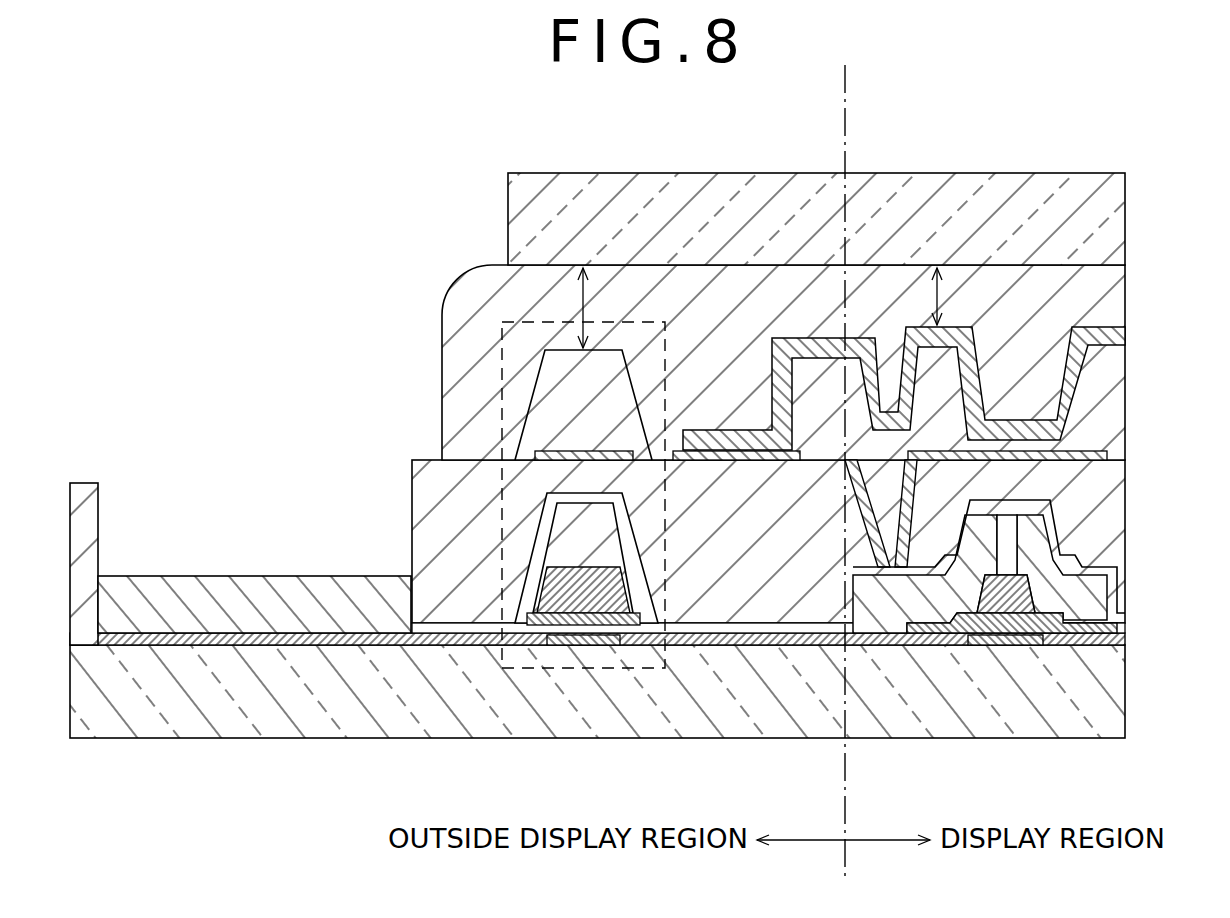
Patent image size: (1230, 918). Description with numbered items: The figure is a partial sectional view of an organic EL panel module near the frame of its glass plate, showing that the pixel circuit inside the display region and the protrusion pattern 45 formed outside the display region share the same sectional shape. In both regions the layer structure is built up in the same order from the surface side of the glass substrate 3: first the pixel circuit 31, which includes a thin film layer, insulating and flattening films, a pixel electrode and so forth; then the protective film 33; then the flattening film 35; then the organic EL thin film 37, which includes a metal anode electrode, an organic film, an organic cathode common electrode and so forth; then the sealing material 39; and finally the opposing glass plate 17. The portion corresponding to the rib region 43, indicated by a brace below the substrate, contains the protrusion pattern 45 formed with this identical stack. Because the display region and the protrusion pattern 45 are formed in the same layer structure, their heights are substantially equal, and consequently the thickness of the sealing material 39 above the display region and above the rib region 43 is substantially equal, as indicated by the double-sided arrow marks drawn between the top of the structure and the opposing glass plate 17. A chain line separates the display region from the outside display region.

The glass substrate 3 is at (1118, 693).
The opposing glass plate 17 is at (1118, 222).
The pixel circuit 31 is at (1135, 553).
The protective film 33 is at (1048, 520).
The flattening film 35 is at (1112, 488).
The organic EL thin film 37 is at (1135, 325).
The sealing material 39 is at (453, 325).
The rib region 43 is at (665, 745).
The protrusion pattern 45 is at (516, 386).